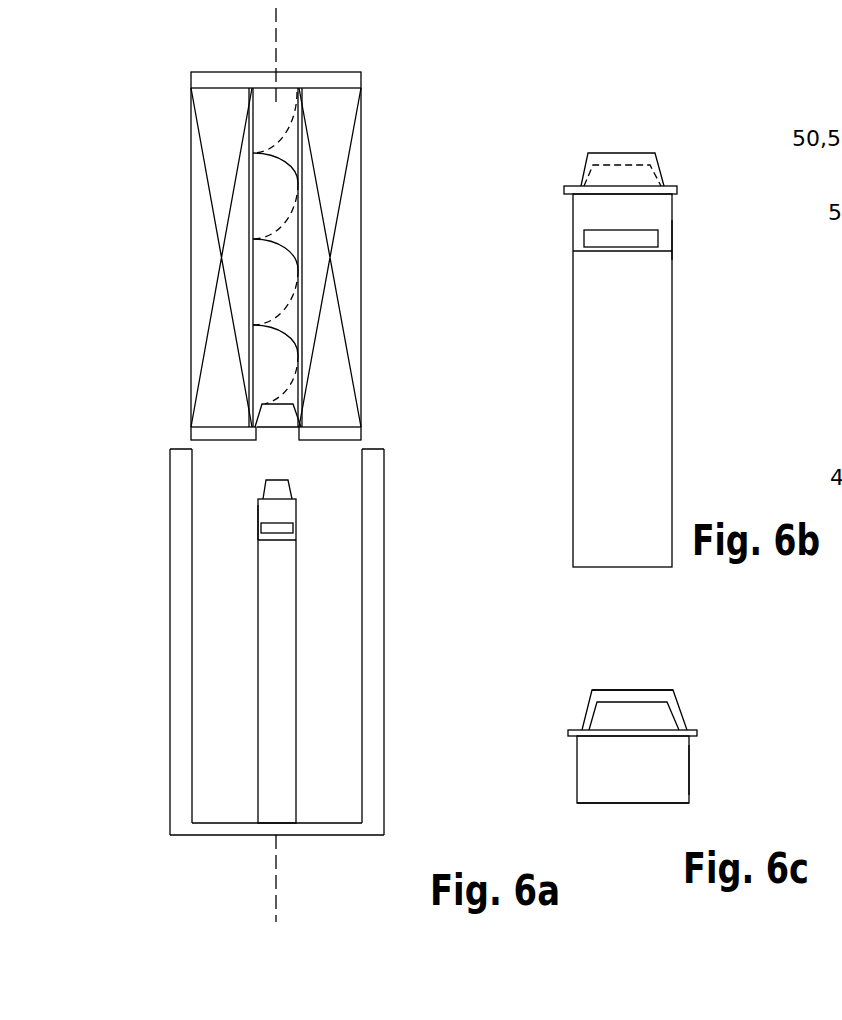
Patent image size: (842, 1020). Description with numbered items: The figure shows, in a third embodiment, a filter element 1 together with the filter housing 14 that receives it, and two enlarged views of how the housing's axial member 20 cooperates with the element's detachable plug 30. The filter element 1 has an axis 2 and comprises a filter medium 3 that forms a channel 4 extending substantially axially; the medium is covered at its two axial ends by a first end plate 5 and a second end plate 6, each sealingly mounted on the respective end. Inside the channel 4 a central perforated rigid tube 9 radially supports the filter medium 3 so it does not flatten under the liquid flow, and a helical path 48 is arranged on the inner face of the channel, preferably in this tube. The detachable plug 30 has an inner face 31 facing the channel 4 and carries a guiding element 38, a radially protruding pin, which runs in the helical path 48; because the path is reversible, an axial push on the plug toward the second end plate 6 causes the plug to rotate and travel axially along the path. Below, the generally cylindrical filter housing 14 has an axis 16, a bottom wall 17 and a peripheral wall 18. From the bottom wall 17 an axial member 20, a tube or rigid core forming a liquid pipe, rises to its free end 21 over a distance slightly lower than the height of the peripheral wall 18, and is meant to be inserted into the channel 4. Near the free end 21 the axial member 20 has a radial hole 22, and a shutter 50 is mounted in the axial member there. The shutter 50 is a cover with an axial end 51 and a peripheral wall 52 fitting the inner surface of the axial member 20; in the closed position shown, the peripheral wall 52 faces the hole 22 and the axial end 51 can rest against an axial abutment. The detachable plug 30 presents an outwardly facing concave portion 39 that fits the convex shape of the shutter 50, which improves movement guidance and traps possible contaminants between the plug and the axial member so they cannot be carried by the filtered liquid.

In FIG. 6A, the filter element 1 is at (256, 232).
In FIG. 6A, the axis 2 is at (275, 32).
In FIG. 6A, the filter medium 3 is at (195, 180).
In FIG. 6A, the channel 4 is at (277, 200).
In FIG. 6A, the first end plate 5 is at (203, 437).
In FIG. 6A, the second end plate 6 is at (333, 80).
In FIG. 6A, the central perforated rigid tube 9 is at (252, 148).
In FIG. 6A, the filter housing 14 is at (250, 652).
In FIG. 6A, the axis 16 is at (277, 895).
In FIG. 6A, the bottom wall 17 is at (340, 829).
In FIG. 6A, the peripheral wall 18 is at (178, 741).
In FIG. 6A, the axial member 20 is at (285, 663).
In FIG. 6B, the axial member 20 is at (623, 494).
In FIG. 6C, the axial member 20 is at (662, 787).
In FIG. 6A, the free end 21 is at (297, 515).
In FIG. 6B, the free end 21 is at (573, 215).
In FIG. 6A, the radial hole 22 is at (293, 527).
In FIG. 6B, the radial hole 22 is at (592, 237).
In FIG. 6A, the detachable plug 30 is at (283, 403).
In FIG. 6B, the detachable plug 30 is at (602, 160).
In FIG. 6C, the detachable plug 30 is at (608, 698).
In FIG. 6C, the inner face 31 is at (640, 690).
In FIG. 6B, the guiding element 38 is at (673, 187).
In FIG. 6C, the guiding element 38 is at (693, 730).
In FIG. 6A, the outwardly facing concave portion 39 is at (277, 433).
In FIG. 6C, the outwardly facing concave portion 39 is at (623, 703).
In FIG. 6A, the helical path 48 is at (297, 156).
In FIG. 6A, the shutter 50 is at (278, 639).
In FIG. 6B, the shutter 50 is at (625, 330).
In FIG. 6C, the shutter 50 is at (618, 715).
In FIG. 6A, the axial end 51 is at (274, 480).
In FIG. 6C, the axial end 51 is at (628, 803).
In FIG. 6A, the peripheral wall 52 is at (268, 513).
In FIG. 6B, the peripheral wall 52 is at (663, 239).
In FIG. 6C, the peripheral wall 52 is at (657, 765).